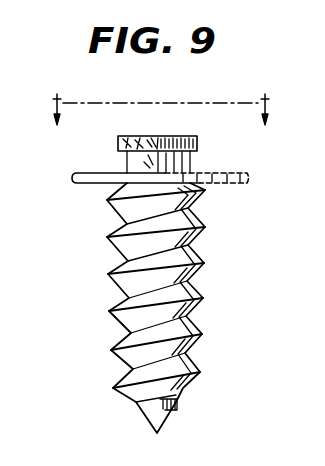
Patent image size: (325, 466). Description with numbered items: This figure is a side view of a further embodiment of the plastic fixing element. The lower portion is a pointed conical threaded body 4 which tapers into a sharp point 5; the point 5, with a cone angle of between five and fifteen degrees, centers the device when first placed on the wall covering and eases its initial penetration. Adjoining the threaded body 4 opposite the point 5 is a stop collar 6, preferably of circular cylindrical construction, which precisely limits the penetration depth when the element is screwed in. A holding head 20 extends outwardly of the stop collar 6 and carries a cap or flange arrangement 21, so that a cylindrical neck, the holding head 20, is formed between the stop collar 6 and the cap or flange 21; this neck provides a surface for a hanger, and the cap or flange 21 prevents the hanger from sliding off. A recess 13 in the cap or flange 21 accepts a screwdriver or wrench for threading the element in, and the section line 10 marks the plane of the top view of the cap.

The section line 10 is at (160, 113).
The recess 13 is at (141, 137).
The cap or flange arrangement 21 is at (198, 143).
The holding head 20 is at (199, 163).
The stop collar 6 is at (86, 184).
The threaded body 4 is at (125, 368).
The point 5 is at (147, 415).